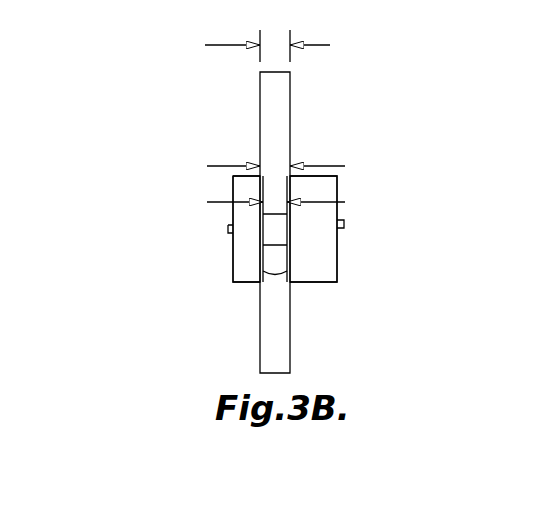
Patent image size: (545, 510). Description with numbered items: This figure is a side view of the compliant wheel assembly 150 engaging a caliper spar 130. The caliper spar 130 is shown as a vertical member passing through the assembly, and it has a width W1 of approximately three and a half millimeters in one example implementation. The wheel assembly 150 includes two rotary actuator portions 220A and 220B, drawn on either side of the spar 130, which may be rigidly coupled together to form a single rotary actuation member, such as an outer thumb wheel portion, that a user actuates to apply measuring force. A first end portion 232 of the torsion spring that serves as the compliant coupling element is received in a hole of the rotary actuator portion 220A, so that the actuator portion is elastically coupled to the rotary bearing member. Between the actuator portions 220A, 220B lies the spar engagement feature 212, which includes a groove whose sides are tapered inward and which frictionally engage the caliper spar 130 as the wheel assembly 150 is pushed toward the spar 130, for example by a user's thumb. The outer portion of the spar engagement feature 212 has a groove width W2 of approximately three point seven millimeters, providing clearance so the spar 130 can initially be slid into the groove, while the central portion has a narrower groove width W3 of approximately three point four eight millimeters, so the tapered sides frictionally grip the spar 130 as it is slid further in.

The caliper spar 130 is at (292, 92).
The width of the caliper spar W1 is at (222, 45).
The groove width at outer portion W2 is at (345, 166).
The groove width at central portion W3 is at (345, 202).
The compliant wheel assembly 150 is at (197, 273).
The rotary actuator portion 220B is at (245, 283).
The rotary actuator portion 220A is at (315, 283).
The first end portion 232 is at (344, 224).
The spar engagement feature 212 is at (275, 277).